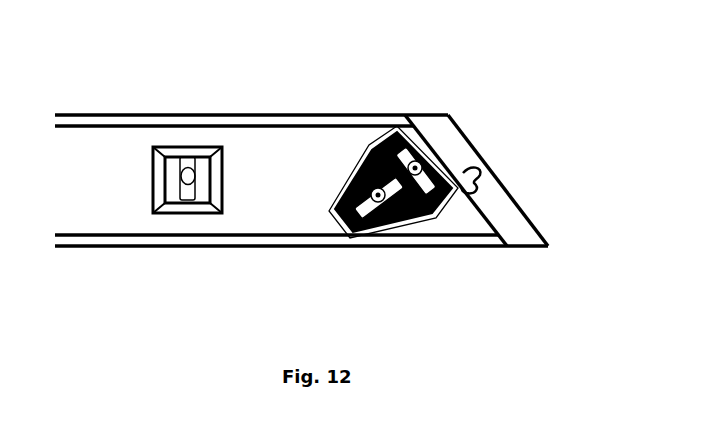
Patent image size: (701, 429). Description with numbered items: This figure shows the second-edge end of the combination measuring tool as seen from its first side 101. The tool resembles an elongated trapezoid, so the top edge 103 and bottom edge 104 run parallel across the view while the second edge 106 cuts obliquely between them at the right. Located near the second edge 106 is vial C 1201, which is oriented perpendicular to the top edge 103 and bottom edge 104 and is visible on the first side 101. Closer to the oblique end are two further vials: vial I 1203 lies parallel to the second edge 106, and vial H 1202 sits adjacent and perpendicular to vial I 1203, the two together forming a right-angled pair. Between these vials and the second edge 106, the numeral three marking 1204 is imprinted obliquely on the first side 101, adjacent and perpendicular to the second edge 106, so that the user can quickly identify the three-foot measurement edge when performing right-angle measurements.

The first side 101 is at (391, 275).
The top edge 103 is at (264, 108).
The bottom edge 104 is at (240, 253).
The second edge 106 is at (507, 182).
The vial C 1201 is at (179, 140).
The vial H 1202 is at (366, 152).
The vial I 1203 is at (399, 136).
The numeral "3" 1204 is at (482, 162).